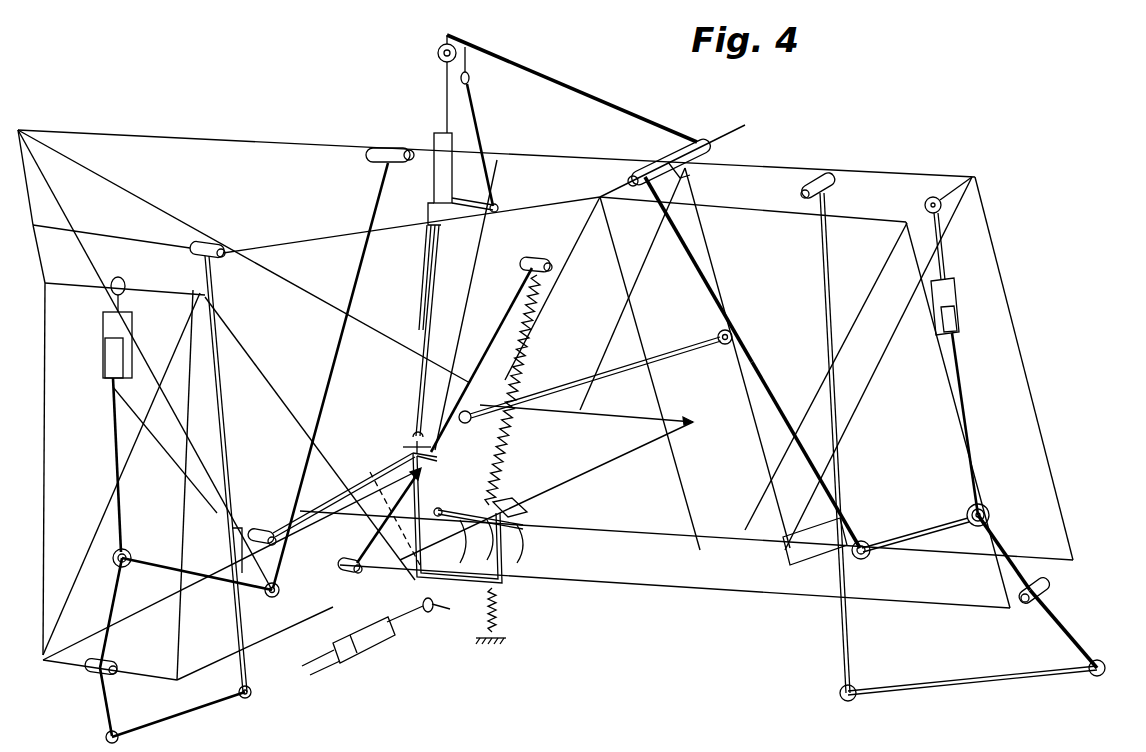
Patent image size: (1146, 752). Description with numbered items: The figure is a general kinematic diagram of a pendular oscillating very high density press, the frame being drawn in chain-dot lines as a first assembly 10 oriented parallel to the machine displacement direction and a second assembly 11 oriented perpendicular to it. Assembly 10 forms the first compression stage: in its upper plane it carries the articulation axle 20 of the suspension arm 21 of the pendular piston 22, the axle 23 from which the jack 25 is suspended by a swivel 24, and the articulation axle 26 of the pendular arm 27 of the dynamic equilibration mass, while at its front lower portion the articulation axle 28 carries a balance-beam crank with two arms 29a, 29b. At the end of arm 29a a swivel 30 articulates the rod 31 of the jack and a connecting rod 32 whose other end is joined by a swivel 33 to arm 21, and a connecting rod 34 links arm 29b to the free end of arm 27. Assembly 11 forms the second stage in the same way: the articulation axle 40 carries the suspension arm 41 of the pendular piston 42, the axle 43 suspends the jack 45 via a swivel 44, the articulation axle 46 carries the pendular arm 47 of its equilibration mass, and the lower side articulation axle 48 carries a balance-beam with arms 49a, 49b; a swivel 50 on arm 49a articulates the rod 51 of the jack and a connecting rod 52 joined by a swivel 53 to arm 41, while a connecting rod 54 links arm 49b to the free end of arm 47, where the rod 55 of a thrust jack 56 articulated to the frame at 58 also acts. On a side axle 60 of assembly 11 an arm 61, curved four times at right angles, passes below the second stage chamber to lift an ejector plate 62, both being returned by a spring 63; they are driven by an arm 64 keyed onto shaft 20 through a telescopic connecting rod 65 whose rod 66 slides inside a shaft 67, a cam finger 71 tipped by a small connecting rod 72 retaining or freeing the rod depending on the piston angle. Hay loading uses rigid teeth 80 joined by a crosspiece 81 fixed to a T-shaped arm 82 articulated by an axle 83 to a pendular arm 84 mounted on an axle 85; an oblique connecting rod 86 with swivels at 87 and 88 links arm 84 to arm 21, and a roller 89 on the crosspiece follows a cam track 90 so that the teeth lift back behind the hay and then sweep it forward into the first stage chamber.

The first frame assembly 10 is at (722, 285).
The second frame assembly 11 is at (318, 236).
The articulation axle 20 is at (715, 160).
The suspension arm 21 is at (768, 388).
The pendular piston 22 is at (810, 572).
The axle 23 is at (945, 195).
The swivel 24 is at (945, 206).
The jack 25 is at (960, 300).
The articulation axle 26 is at (826, 178).
The pendular arm 27 is at (846, 460).
The articulation axle 28 is at (1048, 580).
The balance-beam arm 29a is at (1010, 545).
The balance-beam arm 29b is at (1068, 622).
The swivel 30 is at (988, 508).
The jack rod 31 is at (965, 378).
The connecting rod 32 is at (913, 532).
The swivel 33 is at (865, 540).
The connecting rod 34 is at (995, 684).
The articulation axle 40 is at (388, 148).
The suspension arm 41 is at (368, 264).
The pendular piston 42 is at (338, 568).
The axle 43 is at (175, 297).
The swivel 44 is at (126, 283).
The jack 45 is at (132, 370).
The articulation axle 46 is at (212, 243).
The pendular arm 47 is at (230, 448).
The articulation axle 48 is at (112, 663).
The balance-beam arm 49a is at (108, 600).
The balance-beam arm 49b is at (104, 712).
The swivel 50 is at (130, 552).
The jack rod 51 is at (114, 440).
The connecting rod 52 is at (235, 588).
The swivel 53 is at (272, 598).
The connecting rod 54 is at (205, 708).
The thrust jack rod 55 is at (325, 670).
The thrust jack 56 is at (390, 640).
The frame articulation 58 is at (430, 612).
The side axle 60 is at (260, 528).
The ejector arm 61 is at (345, 480).
The ejector plate 62 is at (527, 508).
The spring 63 is at (500, 605).
The drive arm 64 is at (625, 112).
The telescopic connecting rod 65 is at (418, 278).
The rod 66 is at (416, 380).
The shaft 67 is at (434, 140).
The cam finger 71 is at (475, 72).
The small connecting rod 72 is at (480, 150).
The rigid teeth 80 is at (522, 548).
The crosspiece 81 is at (482, 508).
The T-shaped arm 82 is at (462, 541).
The axle 83 is at (420, 604).
The pendular arm 84 is at (498, 334).
The axle 85 is at (536, 258).
The oblique connecting rod 86 is at (585, 383).
The swivel 87 is at (470, 410).
The swivel 88 is at (722, 345).
The roller 89 is at (449, 491).
The cam track 90 is at (512, 390).